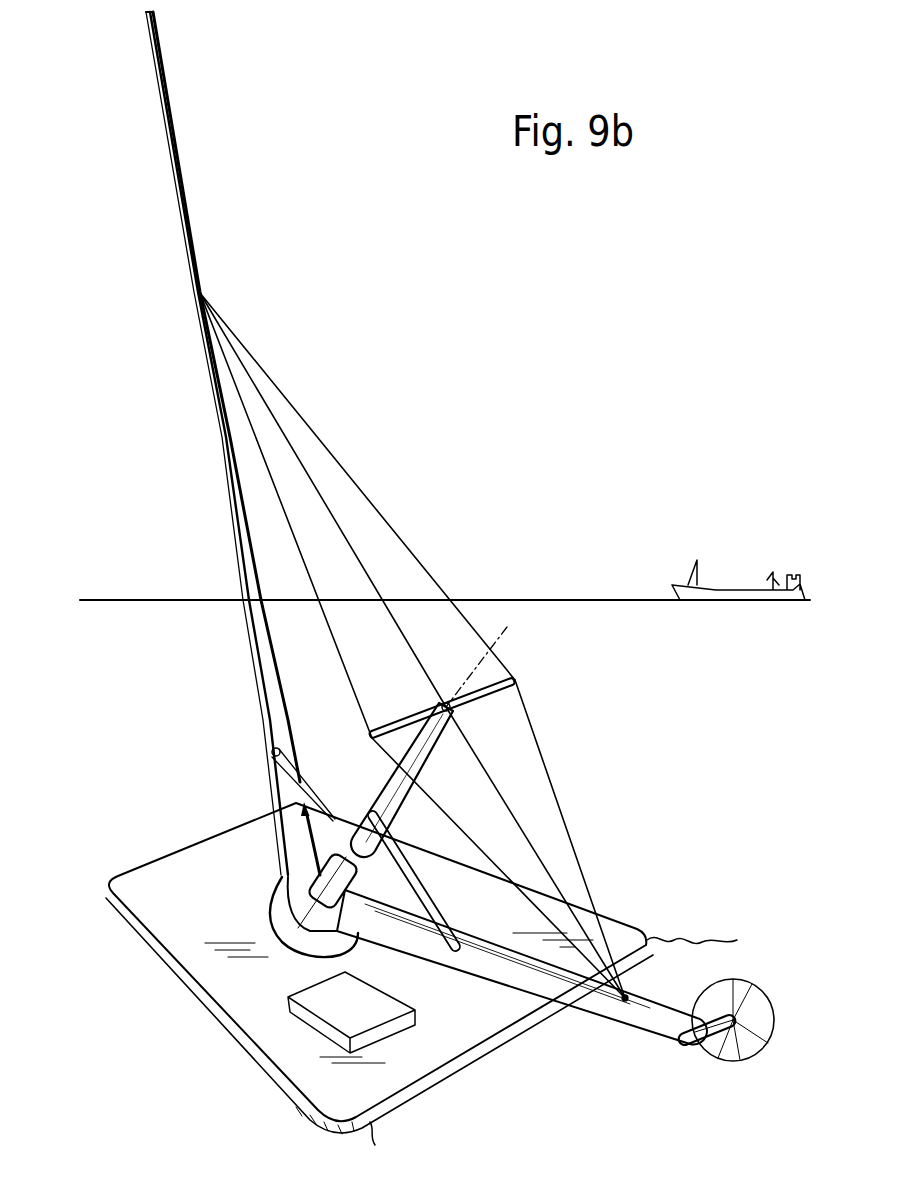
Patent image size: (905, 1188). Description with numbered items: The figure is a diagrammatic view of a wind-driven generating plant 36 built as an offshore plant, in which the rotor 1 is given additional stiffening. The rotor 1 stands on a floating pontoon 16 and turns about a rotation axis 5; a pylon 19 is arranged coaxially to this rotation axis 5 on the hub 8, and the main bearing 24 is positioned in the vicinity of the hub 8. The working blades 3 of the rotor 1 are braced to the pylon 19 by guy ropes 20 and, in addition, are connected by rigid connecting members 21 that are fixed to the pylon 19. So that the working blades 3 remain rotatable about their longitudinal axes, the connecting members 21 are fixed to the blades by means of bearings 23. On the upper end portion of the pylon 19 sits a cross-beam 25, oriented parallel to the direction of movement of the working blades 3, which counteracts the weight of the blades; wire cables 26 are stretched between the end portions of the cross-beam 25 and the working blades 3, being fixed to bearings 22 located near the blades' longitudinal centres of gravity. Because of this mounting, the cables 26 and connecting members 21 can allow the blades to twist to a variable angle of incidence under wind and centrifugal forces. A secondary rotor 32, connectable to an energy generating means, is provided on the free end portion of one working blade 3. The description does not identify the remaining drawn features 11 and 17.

The rotor 1 is at (182, 497).
The working blade 3 is at (173, 156).
The rotation axis 5 is at (473, 672).
The hub 8 is at (286, 922).
The mast axis 11 is at (310, 940).
The pontoon 16 is at (485, 1028).
The board rail 17 is at (378, 1127).
The pylon 19 is at (430, 753).
The guy rope 20 is at (320, 490).
The rigid connecting member 21 is at (333, 820).
The bearing 22 is at (627, 995).
The bearing 23 is at (271, 751).
The main bearing 24 is at (271, 979).
The cross-beam 25 is at (488, 698).
The wire cable 26 is at (253, 433).
The secondary rotor 32 is at (700, 1045).
The wind-driven generating plant 36 is at (433, 375).